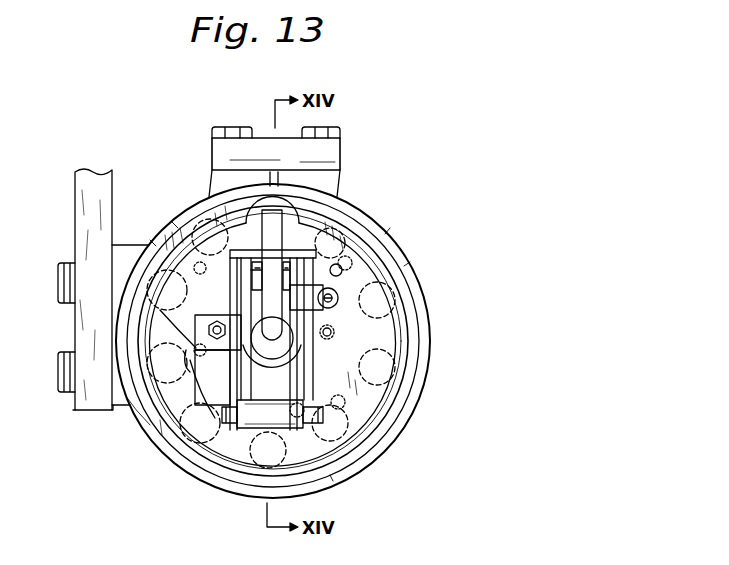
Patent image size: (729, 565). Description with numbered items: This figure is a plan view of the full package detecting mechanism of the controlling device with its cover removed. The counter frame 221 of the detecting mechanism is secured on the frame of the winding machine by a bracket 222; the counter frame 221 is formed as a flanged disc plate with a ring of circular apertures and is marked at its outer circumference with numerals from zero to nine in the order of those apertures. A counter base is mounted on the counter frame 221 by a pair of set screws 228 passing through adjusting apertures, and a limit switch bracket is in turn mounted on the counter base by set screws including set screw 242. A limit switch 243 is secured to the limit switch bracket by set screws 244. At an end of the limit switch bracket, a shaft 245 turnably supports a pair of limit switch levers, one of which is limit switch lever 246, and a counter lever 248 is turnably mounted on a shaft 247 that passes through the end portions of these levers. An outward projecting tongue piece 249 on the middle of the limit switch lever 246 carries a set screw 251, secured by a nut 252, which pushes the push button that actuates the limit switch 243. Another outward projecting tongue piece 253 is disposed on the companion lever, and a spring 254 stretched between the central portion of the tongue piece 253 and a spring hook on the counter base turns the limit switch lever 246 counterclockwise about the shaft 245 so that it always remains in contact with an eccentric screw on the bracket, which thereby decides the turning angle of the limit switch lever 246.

The counter frame 221 is at (127, 246).
The bracket 222 is at (112, 188).
The set screws 228 is at (333, 333).
The set screw 242 is at (211, 313).
The limit switch 243 is at (240, 478).
The set screws 244 is at (196, 320).
The shaft 245 is at (210, 486).
The limit switch lever 246 is at (294, 400).
The shaft 247 is at (249, 296).
The counter lever 248 is at (310, 243).
The tongue piece 249 is at (147, 423).
The set screw 251 is at (203, 318).
The nut 252 is at (190, 366).
The tongue piece 253 is at (335, 306).
The spring 254 is at (340, 271).